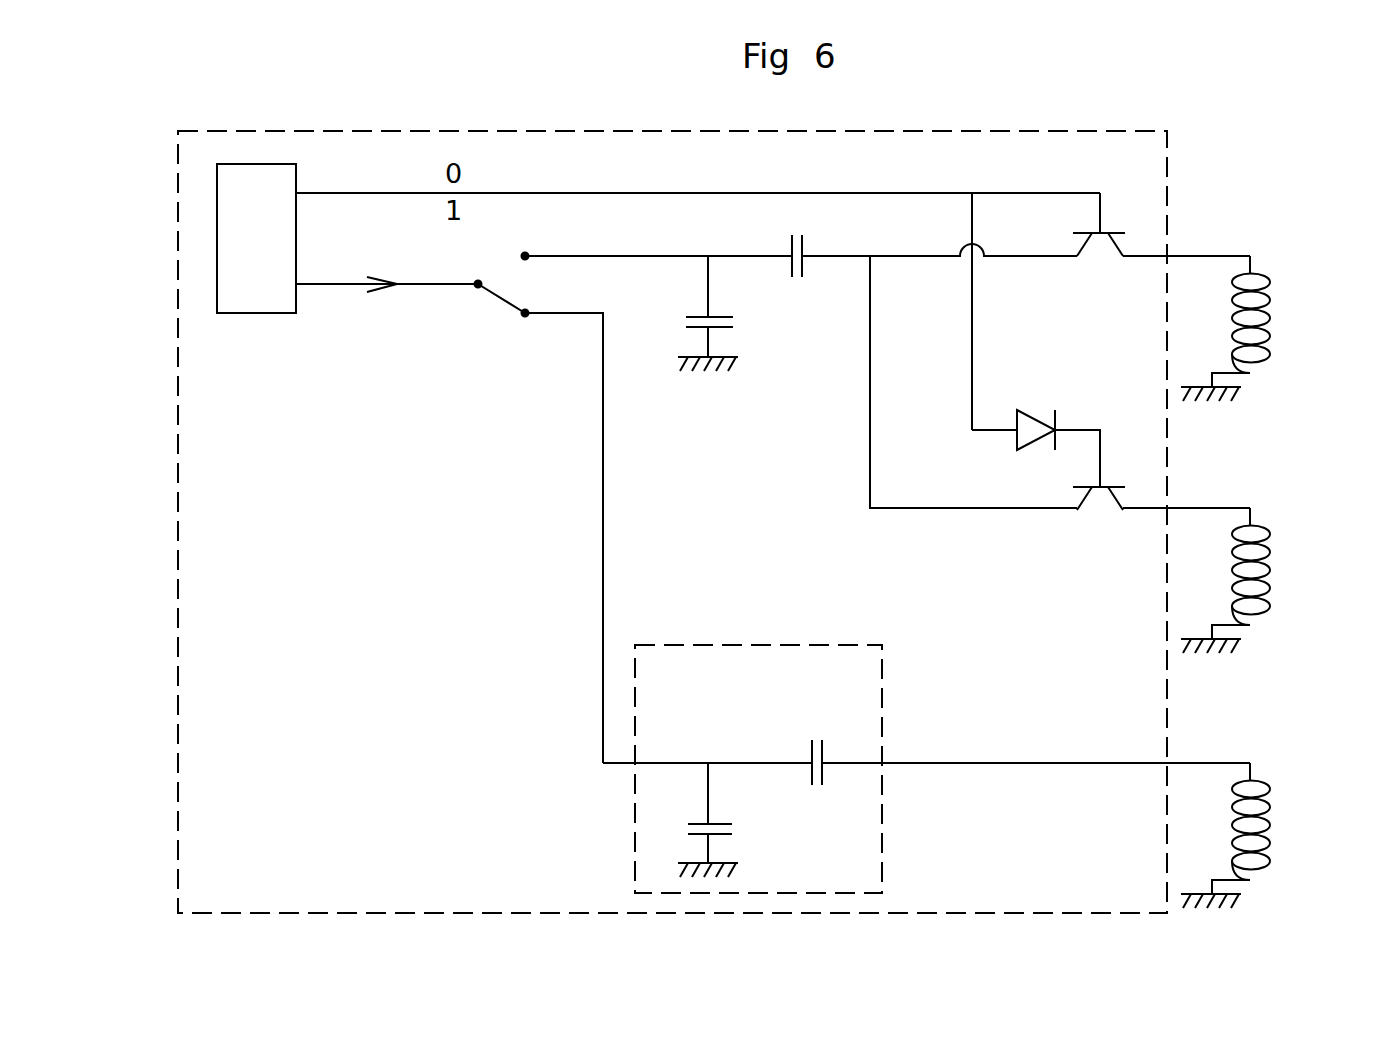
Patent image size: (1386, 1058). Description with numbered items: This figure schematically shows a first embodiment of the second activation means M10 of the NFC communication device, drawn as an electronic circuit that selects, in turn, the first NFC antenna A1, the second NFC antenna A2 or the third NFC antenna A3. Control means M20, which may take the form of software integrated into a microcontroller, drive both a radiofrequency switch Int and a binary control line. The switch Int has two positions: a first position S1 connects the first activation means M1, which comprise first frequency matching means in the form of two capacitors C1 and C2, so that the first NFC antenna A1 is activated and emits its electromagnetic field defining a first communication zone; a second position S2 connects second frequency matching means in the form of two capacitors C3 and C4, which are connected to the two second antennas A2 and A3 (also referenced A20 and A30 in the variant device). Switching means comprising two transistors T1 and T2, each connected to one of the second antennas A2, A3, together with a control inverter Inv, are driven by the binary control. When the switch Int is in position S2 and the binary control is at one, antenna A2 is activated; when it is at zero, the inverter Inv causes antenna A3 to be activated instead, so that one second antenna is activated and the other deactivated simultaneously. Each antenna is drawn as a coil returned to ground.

The control means M20 is at (217, 283).
The second activation means M10 is at (1172, 187).
The first activation means M1 is at (882, 893).
The radiofrequency switch Int is at (410, 282).
The first position S1 is at (563, 522).
The second position S2 is at (657, 241).
The capacitor C1 is at (707, 820).
The capacitor C2 is at (840, 755).
The capacitor C3 is at (692, 313).
The capacitor C4 is at (820, 247).
The transistor T1 is at (1078, 224).
The transistor T2 is at (1078, 493).
The control inverter Inv is at (1036, 432).
The first NFC antenna A1 is at (1068, 835).
The second NFC antenna A2 is at (1254, 328).
The second NFC antenna A20 is at (1196, 328).
The second NFC antenna A3 is at (1254, 580).
The second NFC antenna A30 is at (1196, 580).